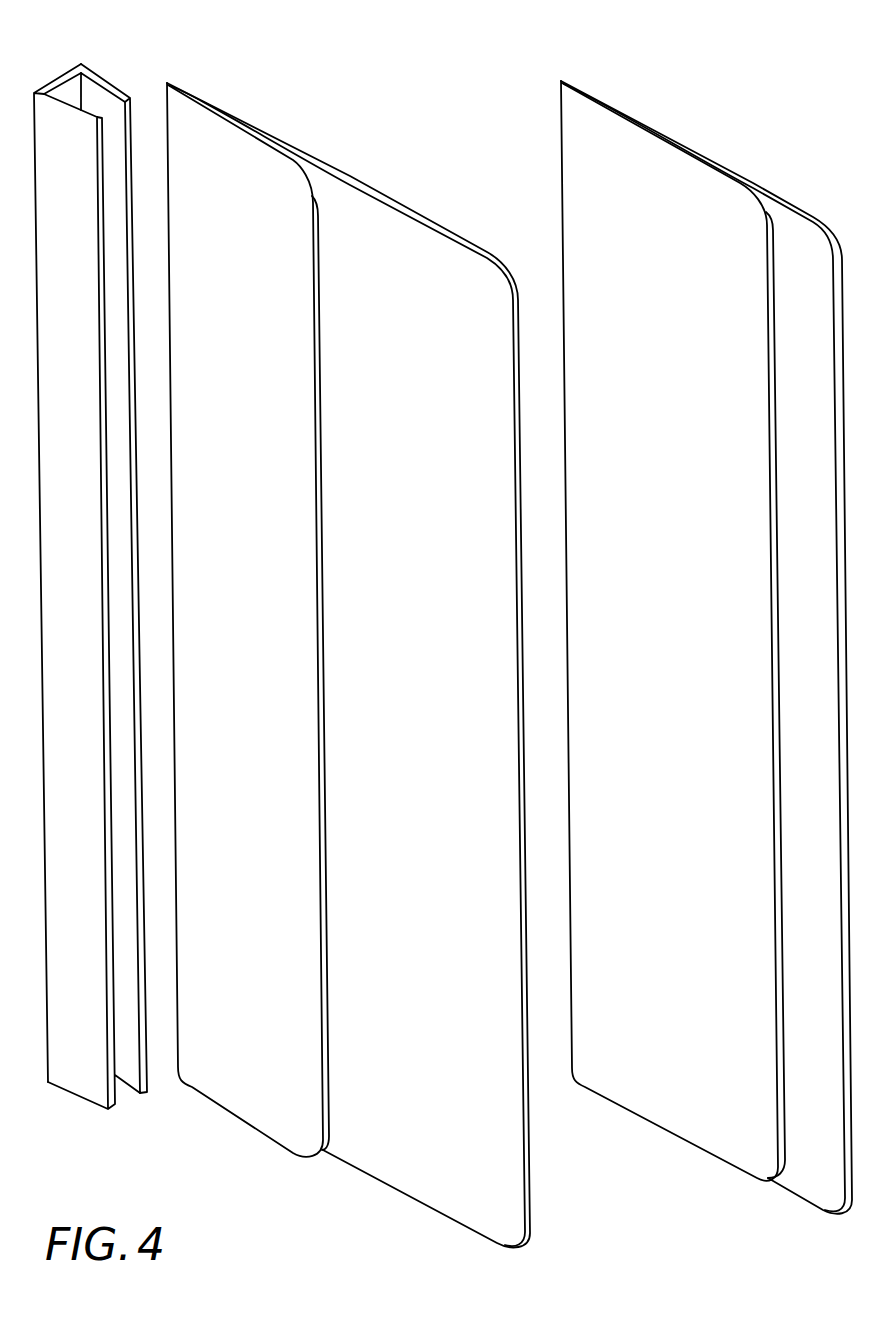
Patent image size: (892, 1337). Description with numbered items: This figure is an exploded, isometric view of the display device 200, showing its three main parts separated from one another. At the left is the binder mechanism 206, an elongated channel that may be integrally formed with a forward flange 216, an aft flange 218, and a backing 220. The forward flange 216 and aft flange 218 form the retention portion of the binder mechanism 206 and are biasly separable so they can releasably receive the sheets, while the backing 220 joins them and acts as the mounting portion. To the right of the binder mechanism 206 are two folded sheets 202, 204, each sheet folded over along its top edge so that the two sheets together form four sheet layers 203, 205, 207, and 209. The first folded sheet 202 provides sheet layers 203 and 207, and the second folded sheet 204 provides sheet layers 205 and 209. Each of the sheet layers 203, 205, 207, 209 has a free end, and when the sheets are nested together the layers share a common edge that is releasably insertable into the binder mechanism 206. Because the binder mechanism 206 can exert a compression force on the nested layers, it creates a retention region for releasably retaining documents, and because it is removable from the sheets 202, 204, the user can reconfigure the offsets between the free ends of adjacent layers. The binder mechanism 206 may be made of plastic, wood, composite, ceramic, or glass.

The display device 200 is at (451, 48).
The folded sheet 202 is at (318, 86).
The sheet layer 203 is at (257, 1130).
The folded sheet 204 is at (765, 142).
The sheet layer 205 is at (687, 1142).
The binder mechanism 206 is at (142, 584).
The sheet layer 207 is at (395, 1189).
The sheet layer 209 is at (783, 1188).
The forward flange 216 is at (70, 142).
The aft flange 218 is at (57, 78).
The backing 220 is at (103, 78).